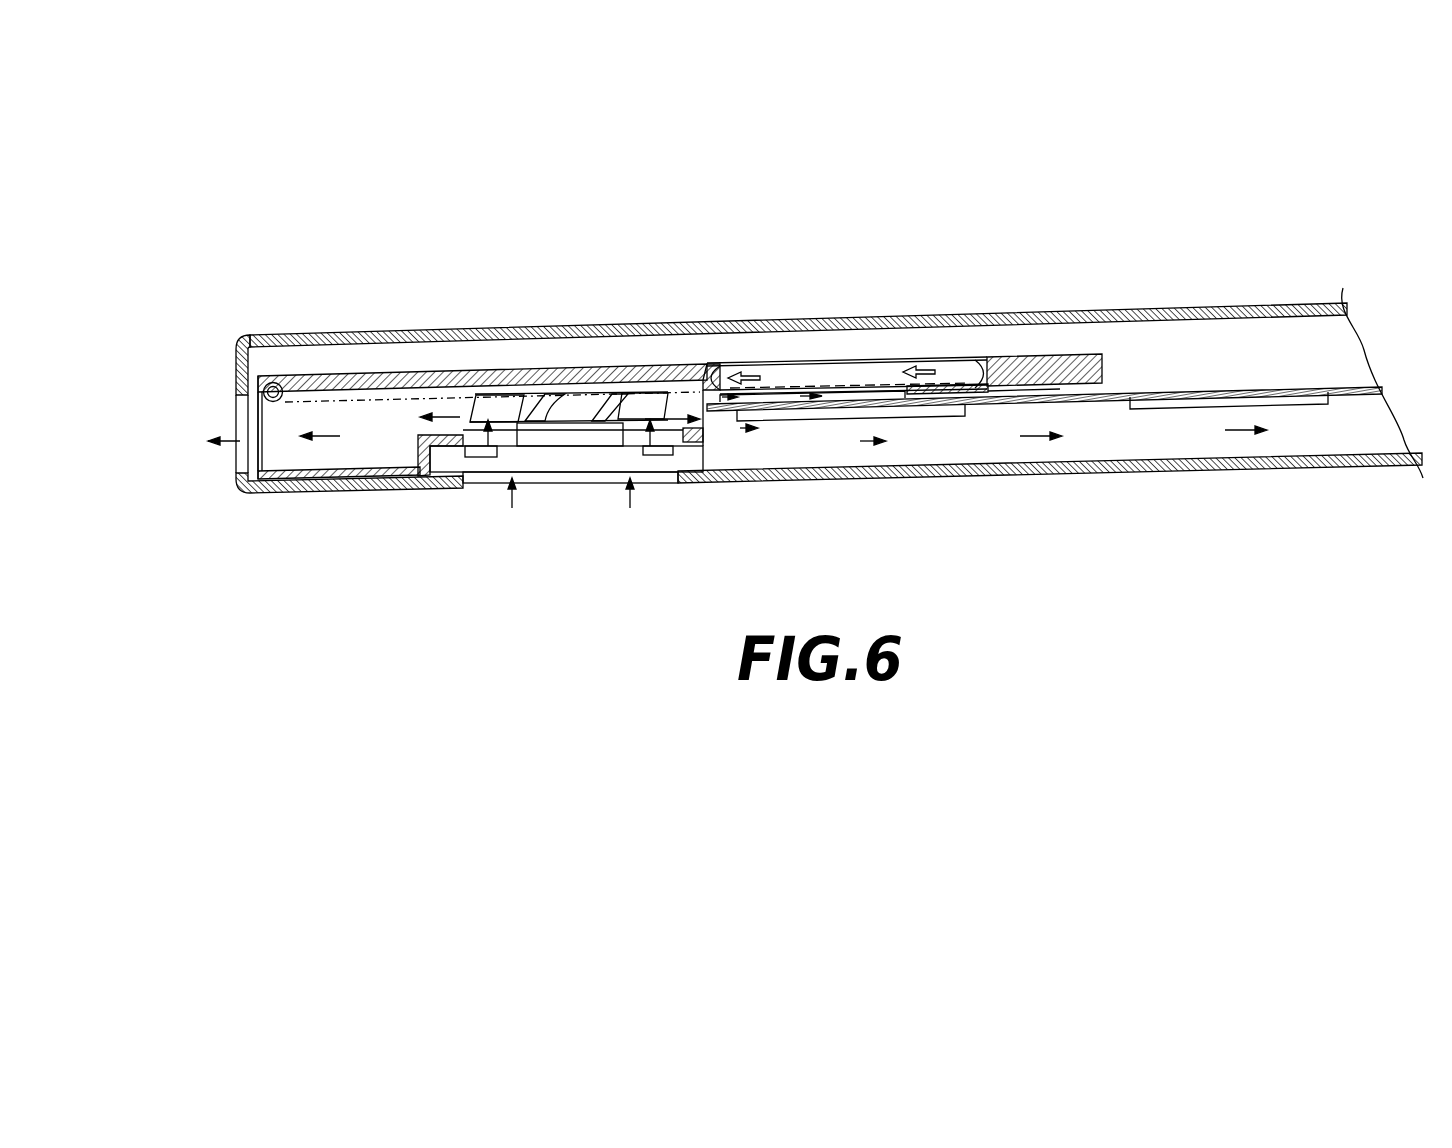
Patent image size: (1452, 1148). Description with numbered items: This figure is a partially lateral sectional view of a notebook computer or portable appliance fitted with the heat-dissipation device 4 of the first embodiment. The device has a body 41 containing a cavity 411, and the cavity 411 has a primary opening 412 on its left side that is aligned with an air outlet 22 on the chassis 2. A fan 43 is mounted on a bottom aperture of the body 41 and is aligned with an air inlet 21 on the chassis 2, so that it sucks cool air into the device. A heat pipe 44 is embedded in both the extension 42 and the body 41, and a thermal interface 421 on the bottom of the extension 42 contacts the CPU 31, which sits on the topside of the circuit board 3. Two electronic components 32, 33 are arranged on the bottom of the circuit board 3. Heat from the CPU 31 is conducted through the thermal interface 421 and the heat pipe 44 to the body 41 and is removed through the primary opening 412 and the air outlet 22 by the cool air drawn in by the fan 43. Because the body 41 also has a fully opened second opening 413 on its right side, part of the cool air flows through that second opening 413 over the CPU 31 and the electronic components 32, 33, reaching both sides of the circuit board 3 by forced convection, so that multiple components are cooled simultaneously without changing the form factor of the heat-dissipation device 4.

The chassis 2 is at (1178, 305).
The air inlet 21 is at (605, 480).
The air outlet 22 is at (240, 420).
The circuit board 3 is at (1272, 392).
The CPU 31 is at (998, 393).
The electronic component 32 is at (850, 417).
The electronic component 33 is at (1210, 402).
The heat-dissipation device 4 is at (690, 352).
The body 41 is at (465, 375).
The cavity 411 is at (368, 440).
The primary opening 412 is at (267, 445).
The second opening 413 is at (703, 446).
The extension 42 is at (1040, 355).
The thermal interface 421 is at (905, 375).
The fan 43 is at (577, 412).
The heat pipe 44 is at (338, 375).